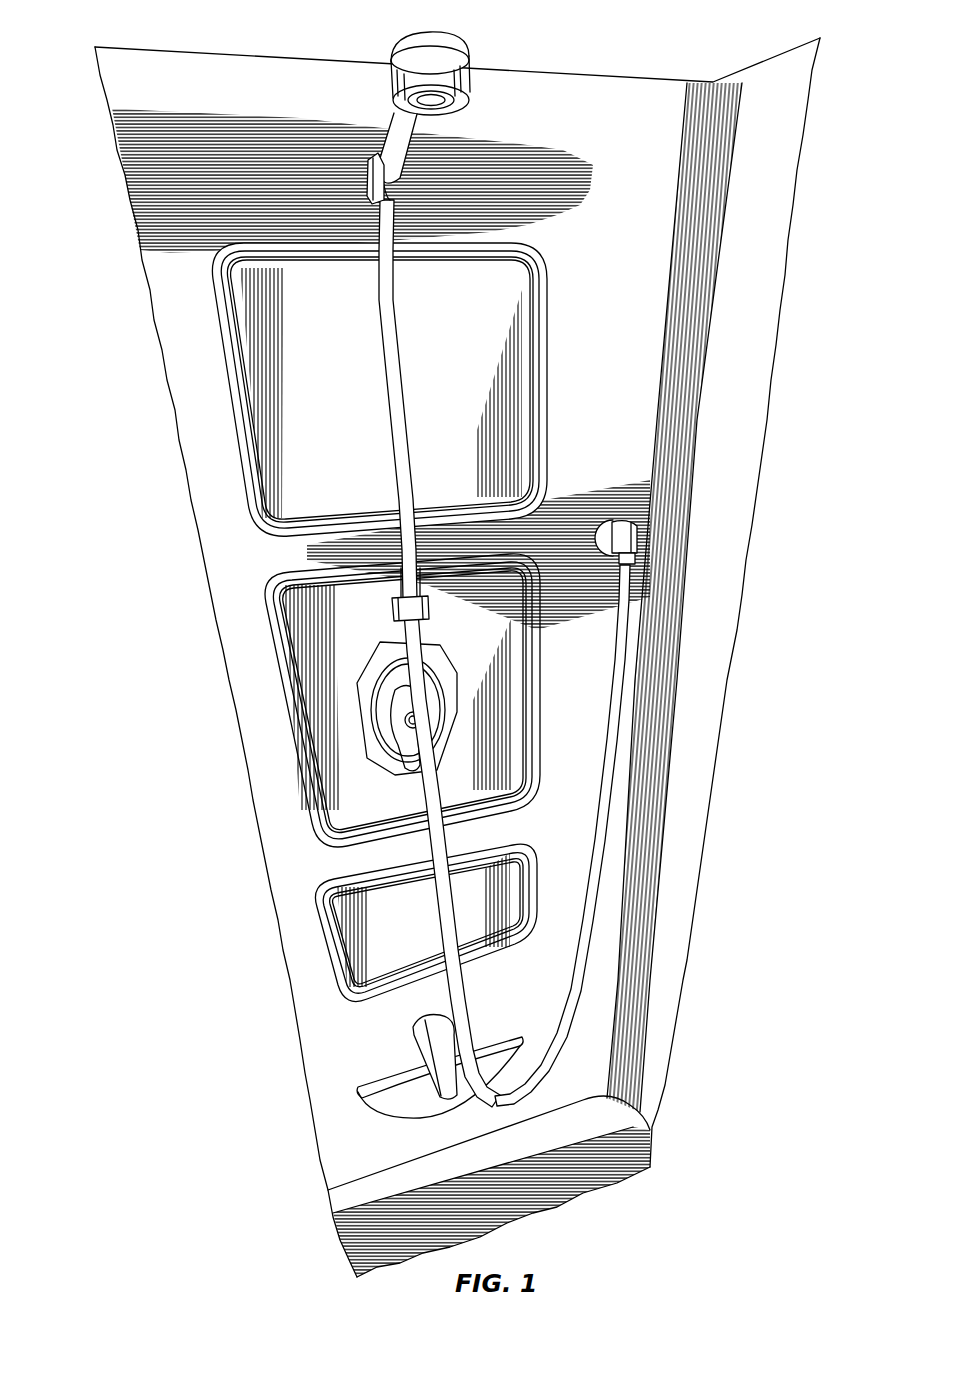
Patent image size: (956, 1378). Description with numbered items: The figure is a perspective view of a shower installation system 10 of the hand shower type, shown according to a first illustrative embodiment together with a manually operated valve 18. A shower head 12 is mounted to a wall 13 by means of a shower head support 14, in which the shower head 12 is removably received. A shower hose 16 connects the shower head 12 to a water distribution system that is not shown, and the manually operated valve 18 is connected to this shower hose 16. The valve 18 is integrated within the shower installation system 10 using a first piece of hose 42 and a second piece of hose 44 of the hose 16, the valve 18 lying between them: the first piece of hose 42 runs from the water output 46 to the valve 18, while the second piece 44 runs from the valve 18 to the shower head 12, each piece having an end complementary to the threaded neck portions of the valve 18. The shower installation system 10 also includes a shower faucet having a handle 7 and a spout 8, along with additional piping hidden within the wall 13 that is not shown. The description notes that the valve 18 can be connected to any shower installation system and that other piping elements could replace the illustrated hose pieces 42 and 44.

The shower installation system 10 is at (293, 84).
The shower head 12 is at (473, 73).
The wall 13 is at (632, 248).
The shower head support 14 is at (367, 186).
The shower hose 16 is at (385, 470).
The manually operated valve 18 is at (388, 625).
The first piece of hose 42 is at (433, 822).
The second piece of hose 44 is at (395, 376).
The water output 46 is at (622, 522).
The handle 7 is at (397, 717).
The spout 8 is at (440, 1042).